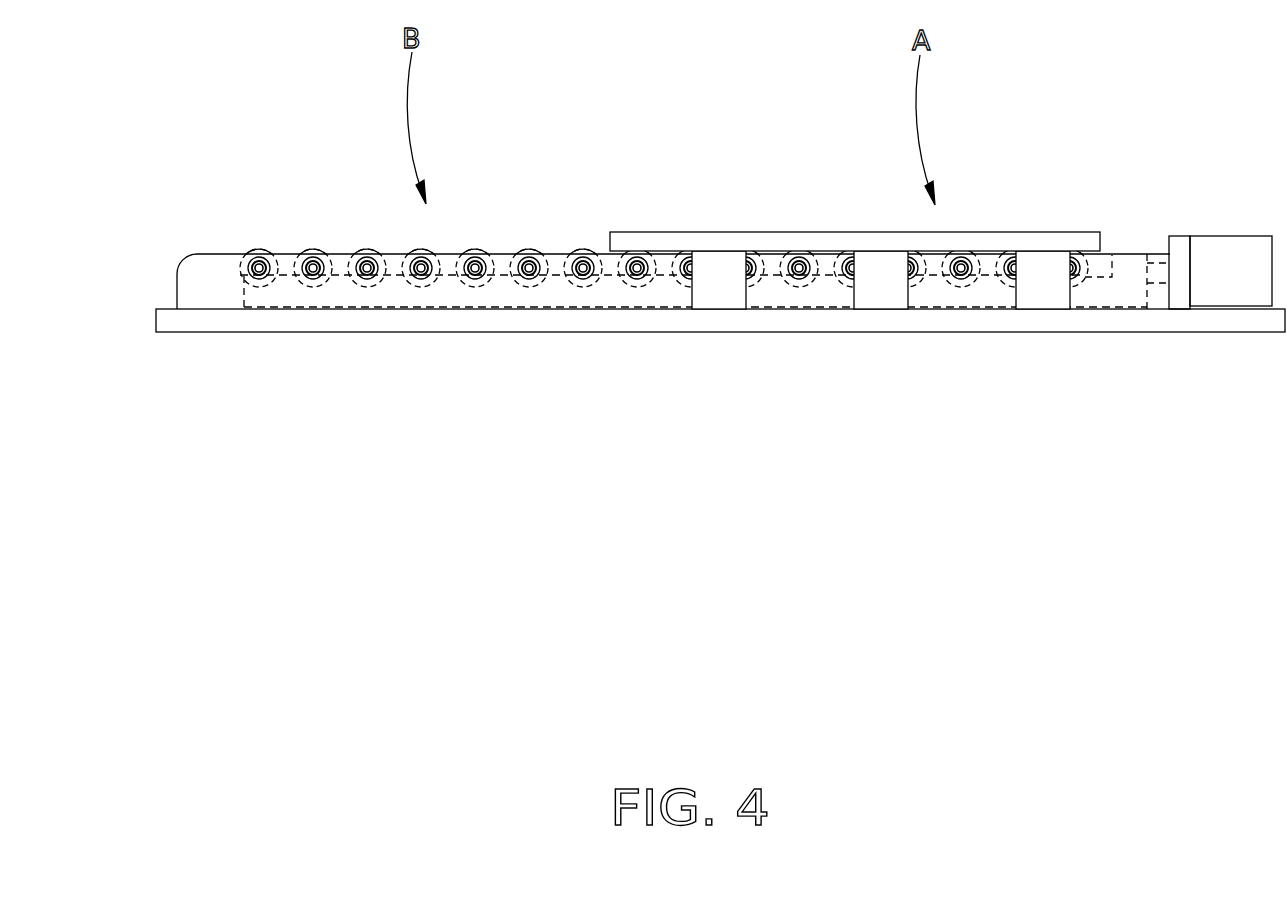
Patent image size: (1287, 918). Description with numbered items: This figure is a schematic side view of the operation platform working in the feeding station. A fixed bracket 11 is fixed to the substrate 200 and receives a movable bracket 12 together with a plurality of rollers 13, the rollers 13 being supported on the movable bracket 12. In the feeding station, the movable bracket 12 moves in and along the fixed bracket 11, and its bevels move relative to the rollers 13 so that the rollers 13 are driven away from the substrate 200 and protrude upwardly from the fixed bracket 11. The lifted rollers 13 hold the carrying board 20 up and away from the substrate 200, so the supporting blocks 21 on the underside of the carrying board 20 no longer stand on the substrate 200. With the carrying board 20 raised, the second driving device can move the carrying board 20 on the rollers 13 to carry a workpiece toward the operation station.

The fixed bracket 11 is at (187, 286).
The movable bracket 12 is at (253, 297).
The rollers 13 is at (311, 250).
The carrying board 20 is at (990, 243).
The supporting blocks 21 is at (708, 283).
The substrate 200 is at (1183, 320).